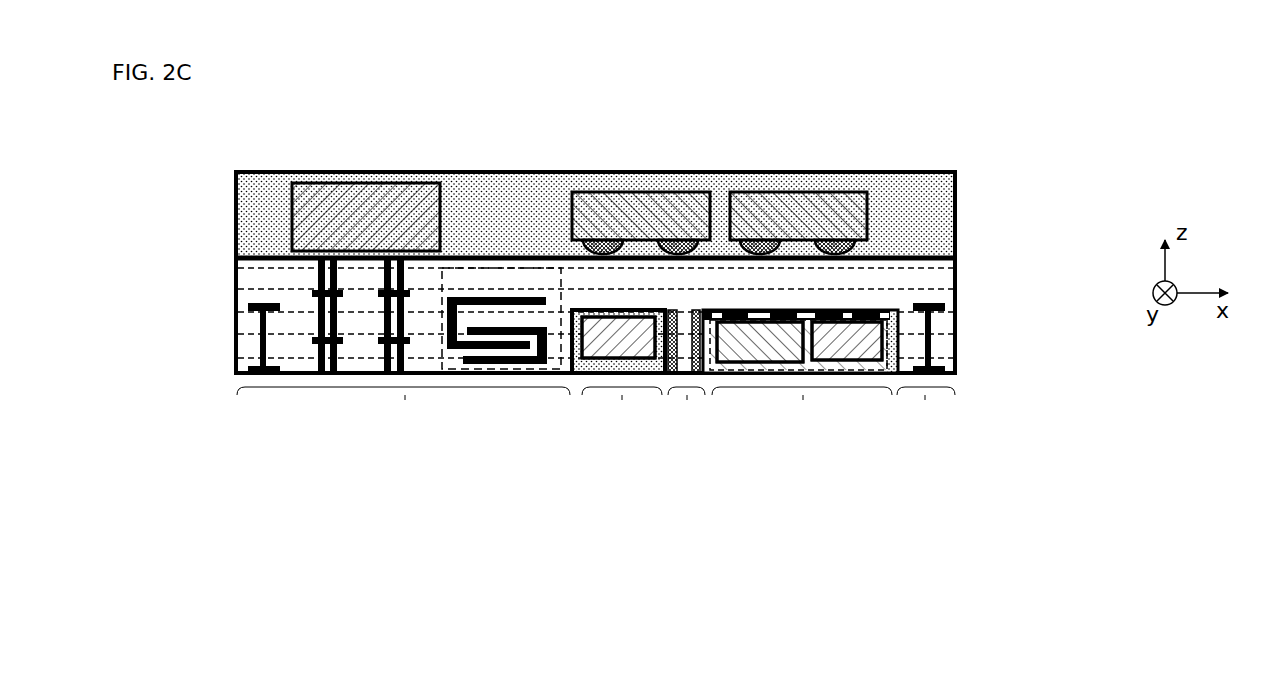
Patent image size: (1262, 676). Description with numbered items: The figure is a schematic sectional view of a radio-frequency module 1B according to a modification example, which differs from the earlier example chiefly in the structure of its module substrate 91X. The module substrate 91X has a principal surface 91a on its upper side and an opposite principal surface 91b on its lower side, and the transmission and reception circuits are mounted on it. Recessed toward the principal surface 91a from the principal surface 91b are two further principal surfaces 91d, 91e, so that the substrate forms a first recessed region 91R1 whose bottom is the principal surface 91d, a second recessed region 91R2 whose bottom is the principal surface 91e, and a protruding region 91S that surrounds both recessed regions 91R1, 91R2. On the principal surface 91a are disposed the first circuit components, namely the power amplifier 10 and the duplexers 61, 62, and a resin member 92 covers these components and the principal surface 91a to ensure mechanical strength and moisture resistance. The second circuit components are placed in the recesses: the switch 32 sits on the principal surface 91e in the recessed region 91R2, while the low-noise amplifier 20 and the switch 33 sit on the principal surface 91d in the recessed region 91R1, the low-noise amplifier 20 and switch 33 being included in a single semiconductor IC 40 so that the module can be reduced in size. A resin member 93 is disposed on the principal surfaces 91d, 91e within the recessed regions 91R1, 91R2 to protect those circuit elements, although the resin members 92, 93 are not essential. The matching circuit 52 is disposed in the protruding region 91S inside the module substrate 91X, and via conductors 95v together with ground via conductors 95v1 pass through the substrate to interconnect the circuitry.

The RF module 1B is at (1012, 138).
The power amplifier 10 is at (375, 183).
The duplexer 61 is at (630, 192).
The duplexer 62 is at (790, 192).
The resin member 92 is at (937, 210).
The principal surface 91a is at (938, 250).
The module substrate 91X is at (941, 276).
The via conductor 95v is at (264, 376).
The ground via conductor 95v1 is at (397, 263).
The matching circuit 52 is at (491, 372).
The resin member 93 is at (589, 378).
The switch 32 is at (612, 360).
The principal surface 91e is at (665, 322).
The recessed region 91R1 is at (803, 400).
The recessed region 91R2 is at (622, 400).
The protruding region 91S is at (405, 400).
The principal surface 91b is at (520, 384).
The semiconductor IC 40 is at (808, 364).
The low-noise amplifier 20 is at (751, 365).
The switch 33 is at (855, 362).
The principal surface 91d is at (890, 318).